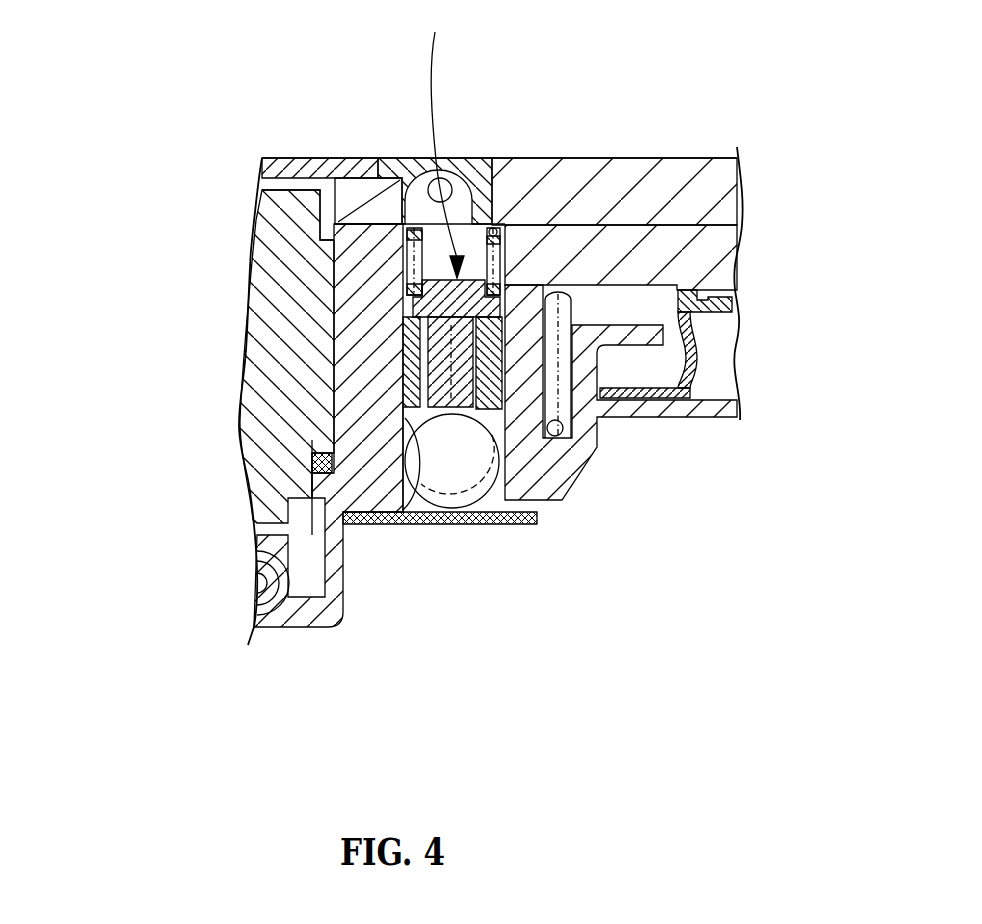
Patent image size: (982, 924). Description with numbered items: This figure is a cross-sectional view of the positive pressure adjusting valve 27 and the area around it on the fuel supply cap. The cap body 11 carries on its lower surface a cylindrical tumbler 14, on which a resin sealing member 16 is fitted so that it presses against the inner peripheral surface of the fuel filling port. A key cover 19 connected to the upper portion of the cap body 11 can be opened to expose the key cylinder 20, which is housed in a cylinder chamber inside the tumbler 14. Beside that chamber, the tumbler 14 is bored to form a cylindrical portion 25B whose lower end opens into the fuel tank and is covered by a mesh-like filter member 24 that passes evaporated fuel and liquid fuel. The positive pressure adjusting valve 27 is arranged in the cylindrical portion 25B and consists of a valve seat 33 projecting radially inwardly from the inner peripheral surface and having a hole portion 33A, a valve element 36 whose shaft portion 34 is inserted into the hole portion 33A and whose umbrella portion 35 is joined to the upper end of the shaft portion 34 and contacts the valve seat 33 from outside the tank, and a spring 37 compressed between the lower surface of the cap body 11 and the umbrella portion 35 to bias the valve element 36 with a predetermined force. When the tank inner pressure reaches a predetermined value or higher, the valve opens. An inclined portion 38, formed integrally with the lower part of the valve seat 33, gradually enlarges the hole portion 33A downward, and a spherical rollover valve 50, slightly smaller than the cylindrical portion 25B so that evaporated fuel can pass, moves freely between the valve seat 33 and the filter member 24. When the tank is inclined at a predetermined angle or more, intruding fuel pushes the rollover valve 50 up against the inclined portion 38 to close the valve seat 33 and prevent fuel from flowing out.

The cap body 11 is at (630, 157).
The tumbler 14 is at (375, 480).
The sealing member 16 is at (583, 450).
The key cover 19 is at (313, 157).
The key cylinder 20 is at (267, 402).
The filter member 24 is at (518, 517).
The cylindrical portion 25B is at (424, 480).
The positive pressure adjusting valve 27 is at (443, 139).
The valve seat 33 is at (413, 353).
The hole portion 33A is at (453, 400).
The shaft portion 34 is at (448, 363).
The umbrella portion 35 is at (485, 348).
The valve element 36 is at (430, 186).
The spring 37 is at (418, 240).
The inclined portion 38 is at (420, 417).
The rollover valve 50 is at (483, 458).